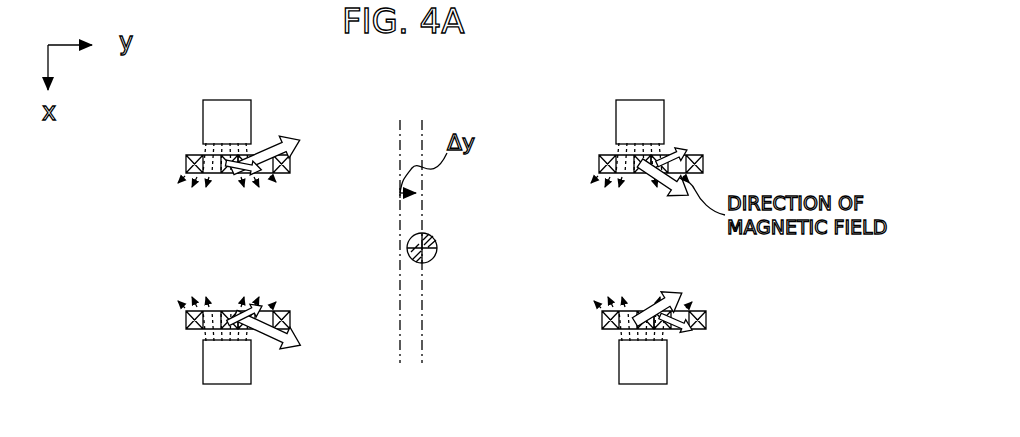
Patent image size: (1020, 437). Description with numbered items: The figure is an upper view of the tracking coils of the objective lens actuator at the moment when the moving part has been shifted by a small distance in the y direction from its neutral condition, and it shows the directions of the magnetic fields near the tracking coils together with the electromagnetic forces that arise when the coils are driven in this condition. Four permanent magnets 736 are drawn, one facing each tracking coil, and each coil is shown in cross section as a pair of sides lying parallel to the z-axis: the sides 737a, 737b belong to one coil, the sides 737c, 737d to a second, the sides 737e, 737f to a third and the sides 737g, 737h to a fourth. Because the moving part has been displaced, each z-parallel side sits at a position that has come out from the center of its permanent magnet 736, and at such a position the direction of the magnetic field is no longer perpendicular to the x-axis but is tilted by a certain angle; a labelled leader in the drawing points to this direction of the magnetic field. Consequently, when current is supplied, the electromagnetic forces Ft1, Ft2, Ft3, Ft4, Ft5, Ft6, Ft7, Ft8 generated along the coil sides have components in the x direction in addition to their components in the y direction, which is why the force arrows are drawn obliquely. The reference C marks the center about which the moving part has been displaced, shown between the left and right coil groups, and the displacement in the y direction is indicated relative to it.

The permanent magnet 736 is at (243, 100).
The tracking coil side 737a is at (190, 312).
The tracking coil side 737b is at (290, 312).
The tracking coil side 737c is at (605, 312).
The tracking coil side 737d is at (705, 312).
The tracking coil side 737e is at (190, 155).
The tracking coil side 737f is at (292, 174).
The tracking coil side 737g is at (603, 155).
The tracking coil side 737h is at (705, 164).
The electromagnetic force Ft1 is at (238, 303).
The electromagnetic force Ft2 is at (300, 345).
The electromagnetic force Ft3 is at (645, 300).
The electromagnetic force Ft4 is at (692, 332).
The electromagnetic force Ft5 is at (232, 174).
The electromagnetic force Ft6 is at (290, 140).
The electromagnetic force Ft7 is at (662, 180).
The electromagnetic force Ft8 is at (690, 150).
The center axis C is at (430, 258).